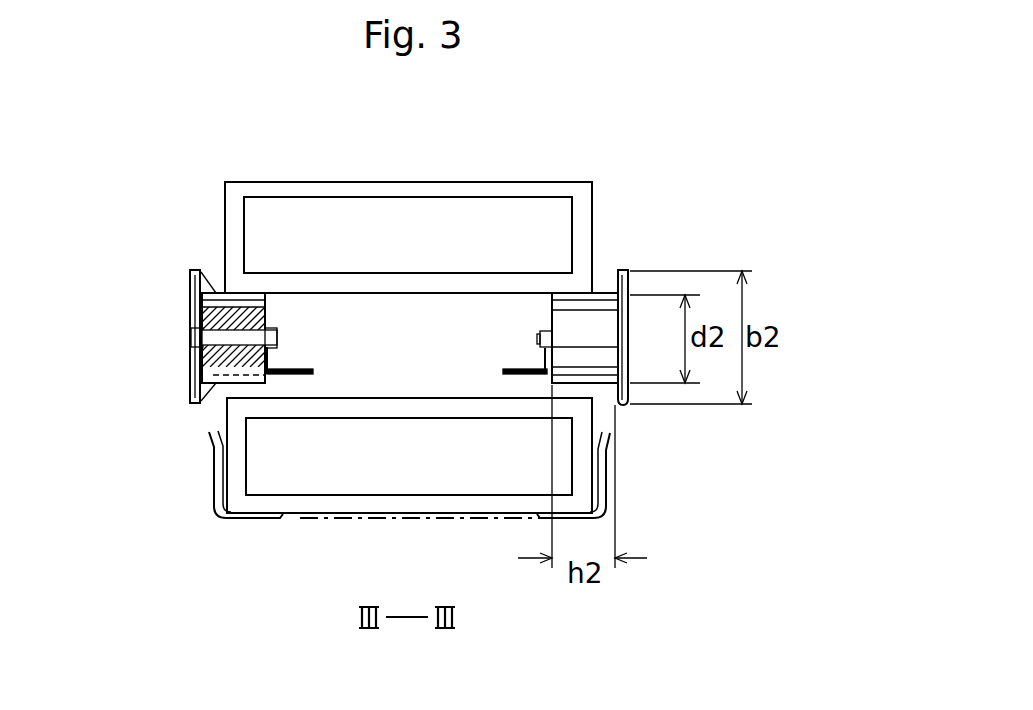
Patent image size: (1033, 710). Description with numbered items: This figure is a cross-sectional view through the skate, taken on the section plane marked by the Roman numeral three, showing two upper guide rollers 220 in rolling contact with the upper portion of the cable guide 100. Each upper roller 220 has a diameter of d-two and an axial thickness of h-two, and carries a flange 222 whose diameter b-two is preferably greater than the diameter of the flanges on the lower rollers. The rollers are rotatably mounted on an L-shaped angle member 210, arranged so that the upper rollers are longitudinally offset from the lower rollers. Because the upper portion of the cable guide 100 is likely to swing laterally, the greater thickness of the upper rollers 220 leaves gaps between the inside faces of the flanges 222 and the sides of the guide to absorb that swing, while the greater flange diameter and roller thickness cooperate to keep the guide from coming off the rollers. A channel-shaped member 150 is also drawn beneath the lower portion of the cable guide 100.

The cable guide 100 is at (373, 182).
The upper guide roller 220 is at (217, 296).
The flange 222 is at (197, 403).
The L-shaped angle member 210 is at (300, 374).
The channel member 150 is at (213, 494).